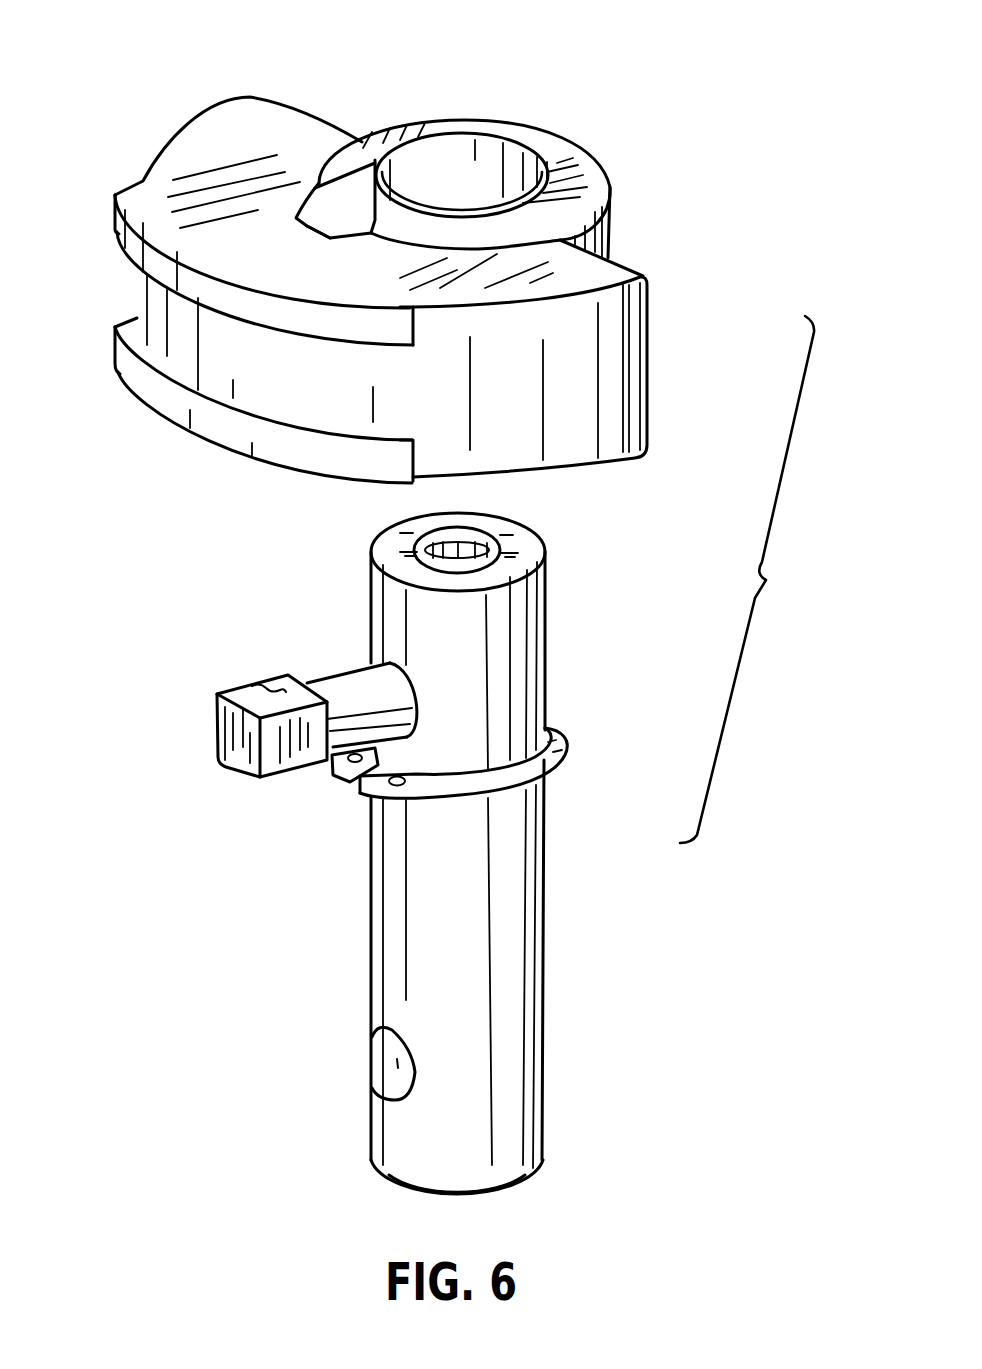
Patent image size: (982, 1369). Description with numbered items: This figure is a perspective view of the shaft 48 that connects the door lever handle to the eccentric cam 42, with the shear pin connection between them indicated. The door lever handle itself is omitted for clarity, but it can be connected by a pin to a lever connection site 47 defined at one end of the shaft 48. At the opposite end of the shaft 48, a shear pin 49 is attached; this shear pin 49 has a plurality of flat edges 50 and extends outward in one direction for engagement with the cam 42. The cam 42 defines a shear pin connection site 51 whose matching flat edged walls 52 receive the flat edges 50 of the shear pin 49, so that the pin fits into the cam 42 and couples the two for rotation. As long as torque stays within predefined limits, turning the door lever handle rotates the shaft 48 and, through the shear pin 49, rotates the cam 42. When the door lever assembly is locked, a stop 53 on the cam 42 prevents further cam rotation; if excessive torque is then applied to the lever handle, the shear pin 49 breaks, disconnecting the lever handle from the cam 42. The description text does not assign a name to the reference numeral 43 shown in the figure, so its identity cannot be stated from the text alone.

The cam 42 is at (623, 192).
The cam clamp body 43 is at (309, 77).
The lever connection site 47 is at (370, 1077).
The shaft 48 is at (548, 978).
The shear pin 49 is at (248, 775).
The flat edges 50 is at (257, 694).
The shear pin connection site 51 is at (302, 211).
The flat edged walls 52 is at (342, 208).
The stop 53 is at (419, 337).